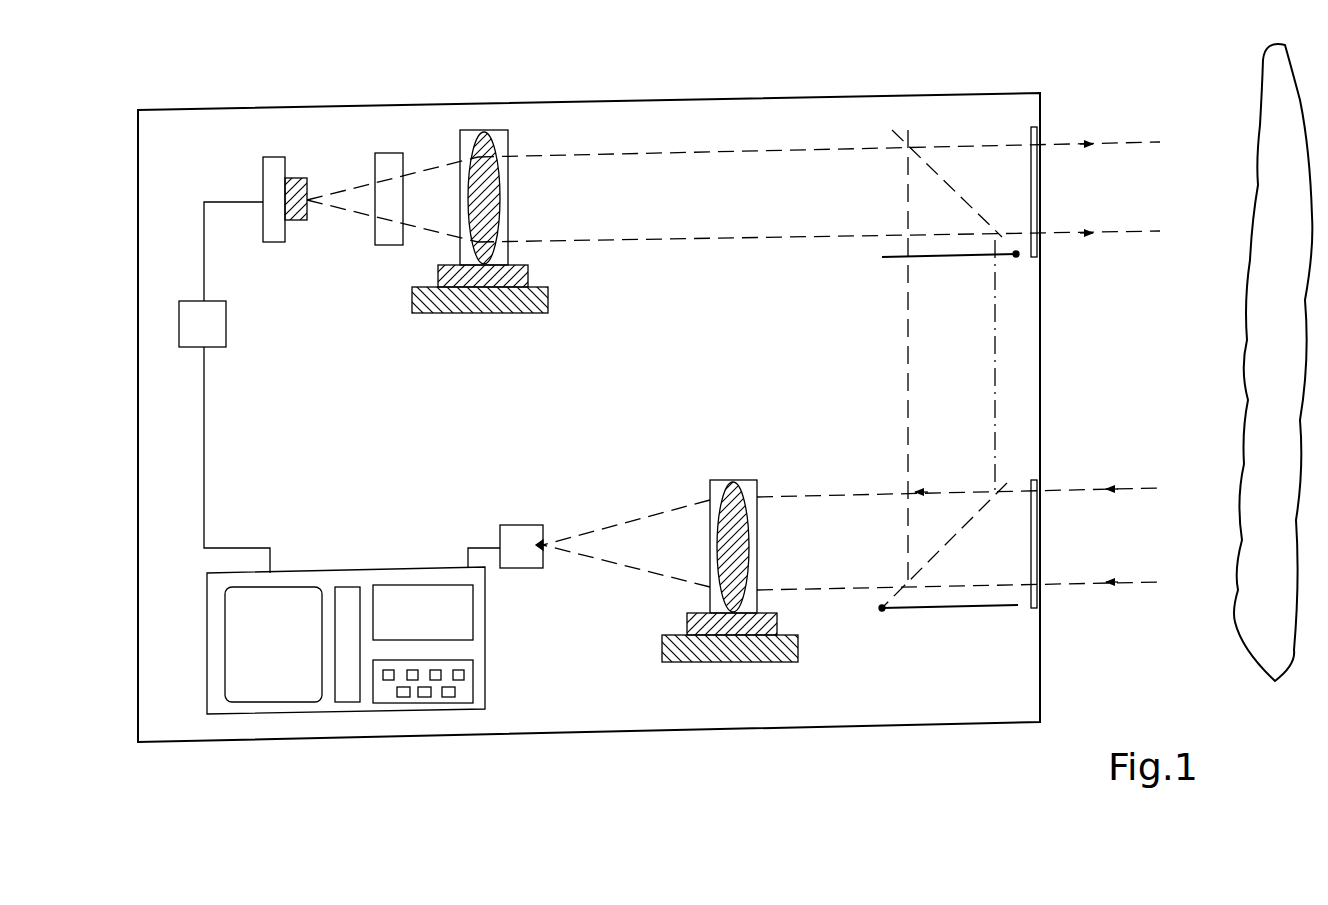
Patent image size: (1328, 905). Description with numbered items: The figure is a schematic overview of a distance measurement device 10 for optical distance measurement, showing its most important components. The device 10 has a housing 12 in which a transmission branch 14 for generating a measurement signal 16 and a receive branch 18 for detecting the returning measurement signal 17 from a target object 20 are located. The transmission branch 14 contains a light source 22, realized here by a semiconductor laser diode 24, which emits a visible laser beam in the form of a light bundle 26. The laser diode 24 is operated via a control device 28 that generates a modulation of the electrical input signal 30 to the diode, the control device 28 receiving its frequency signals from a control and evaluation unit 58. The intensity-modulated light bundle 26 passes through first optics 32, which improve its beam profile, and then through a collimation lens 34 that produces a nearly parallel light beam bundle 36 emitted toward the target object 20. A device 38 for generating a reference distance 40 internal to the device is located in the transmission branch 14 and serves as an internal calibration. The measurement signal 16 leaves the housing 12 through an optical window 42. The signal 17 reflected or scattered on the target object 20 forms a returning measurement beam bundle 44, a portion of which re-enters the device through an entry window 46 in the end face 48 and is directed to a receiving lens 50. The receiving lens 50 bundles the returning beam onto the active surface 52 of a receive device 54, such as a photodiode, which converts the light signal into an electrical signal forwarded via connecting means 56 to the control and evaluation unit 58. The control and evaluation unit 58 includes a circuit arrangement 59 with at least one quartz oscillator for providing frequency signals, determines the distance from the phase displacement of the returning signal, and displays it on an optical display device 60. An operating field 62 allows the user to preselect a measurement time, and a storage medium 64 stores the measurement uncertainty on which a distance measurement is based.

The distance measurement device 10 is at (188, 752).
The housing 12 is at (895, 90).
The transmission branch 14 is at (760, 250).
The measurement signal 16 is at (1020, 202).
The returning measurement signal 17 is at (1114, 552).
The receive branch 18 is at (657, 497).
The target object 20 is at (1232, 366).
The light source 22 is at (274, 165).
The semiconductor laser diode 24 is at (296, 199).
The light bundle 26 is at (447, 211).
The control device 28 is at (190, 332).
The electrical input signal 30 is at (199, 218).
The first optics 32 is at (393, 160).
The collimation lens 34 is at (487, 138).
The parallel light beam bundle 36 is at (767, 202).
The reference distance device 38 is at (966, 259).
The reference distance 40 is at (967, 375).
The optical window 42 is at (1038, 130).
The returning measurement beam bundle 44 is at (847, 562).
The entry window 46 is at (1040, 605).
The end face 48 is at (1041, 373).
The receiving lens 50 is at (738, 482).
The active surface 52 is at (544, 556).
The receive device 54 is at (527, 528).
The connecting means 56 is at (478, 548).
The control and evaluation unit 58 is at (330, 575).
The circuit arrangement 59 is at (270, 682).
The optical display device 60 is at (465, 622).
The operating field 62 is at (468, 690).
The storage medium 64 is at (348, 693).